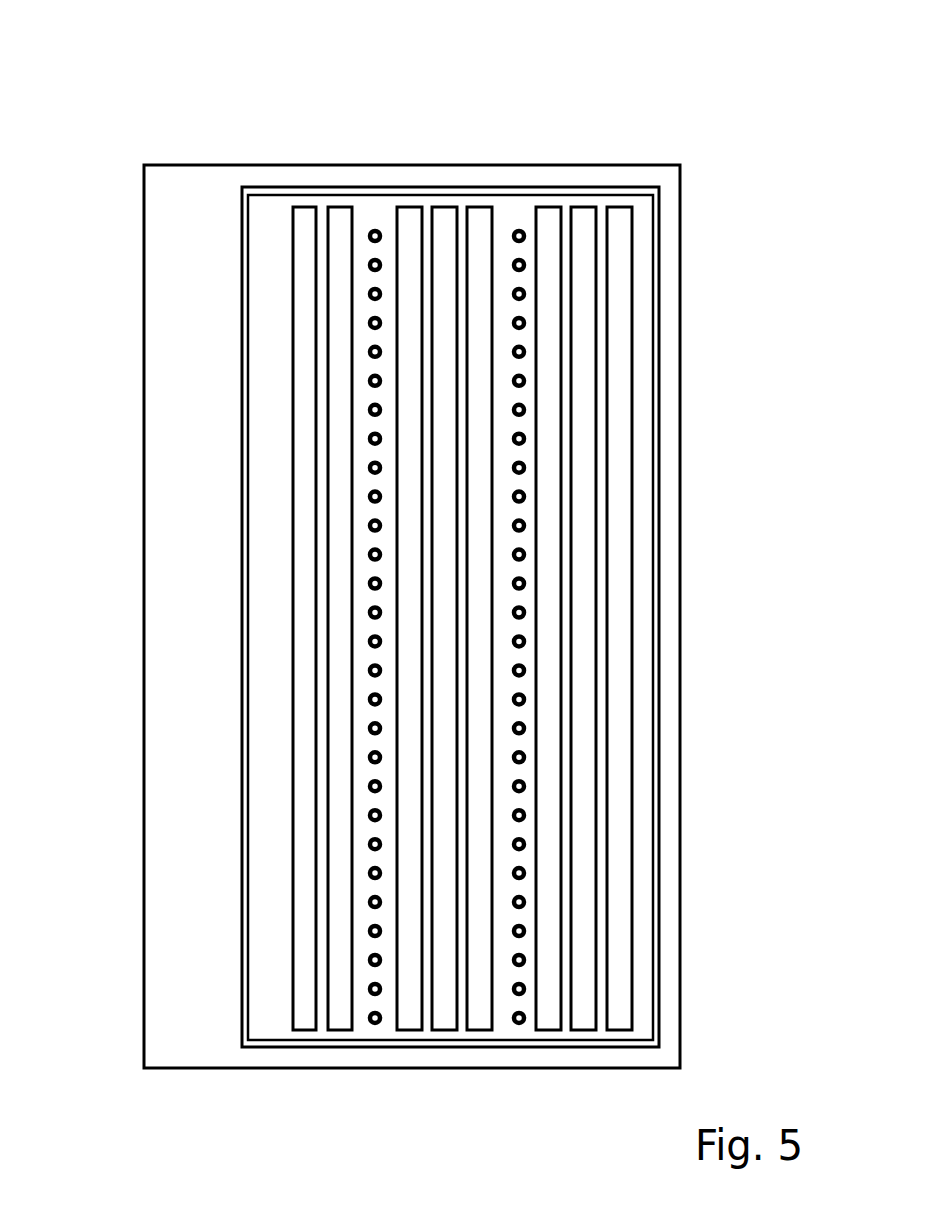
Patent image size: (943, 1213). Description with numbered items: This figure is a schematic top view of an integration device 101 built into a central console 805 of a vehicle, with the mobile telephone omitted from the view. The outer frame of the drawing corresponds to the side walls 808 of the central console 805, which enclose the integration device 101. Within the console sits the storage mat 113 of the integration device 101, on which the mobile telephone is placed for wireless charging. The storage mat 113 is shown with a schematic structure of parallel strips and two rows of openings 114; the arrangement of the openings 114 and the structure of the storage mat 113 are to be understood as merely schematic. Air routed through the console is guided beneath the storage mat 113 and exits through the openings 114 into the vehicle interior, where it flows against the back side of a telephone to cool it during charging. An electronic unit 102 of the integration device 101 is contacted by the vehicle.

The integration device 101 is at (684, 97).
The electronic unit 102 is at (309, 213).
The storage mat 113 is at (502, 212).
The openings 114 is at (520, 230).
The central console 805 is at (671, 184).
The side walls 808 is at (172, 258).